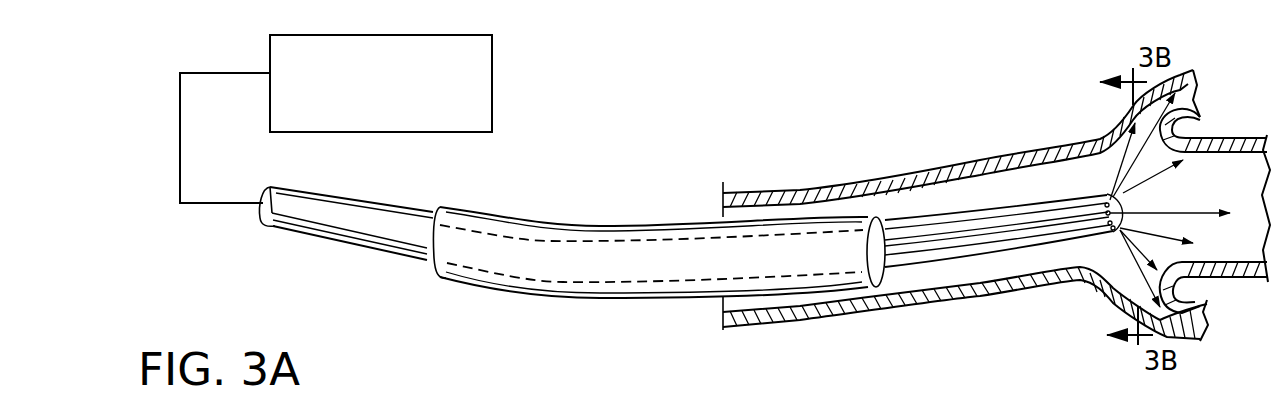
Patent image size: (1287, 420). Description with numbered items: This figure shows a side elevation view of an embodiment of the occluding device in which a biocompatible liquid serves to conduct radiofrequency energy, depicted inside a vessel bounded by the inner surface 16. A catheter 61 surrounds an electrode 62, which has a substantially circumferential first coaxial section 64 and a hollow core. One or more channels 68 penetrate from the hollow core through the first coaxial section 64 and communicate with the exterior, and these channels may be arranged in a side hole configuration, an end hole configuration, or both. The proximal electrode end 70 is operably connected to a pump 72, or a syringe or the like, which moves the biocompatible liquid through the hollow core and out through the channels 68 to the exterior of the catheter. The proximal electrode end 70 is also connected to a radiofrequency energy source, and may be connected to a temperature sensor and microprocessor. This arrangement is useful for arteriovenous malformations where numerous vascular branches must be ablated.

The pump 72 is at (358, 94).
The proximal electrode end 70 is at (367, 207).
The catheter 61 is at (690, 233).
The electrode 62 is at (880, 247).
The first coaxial section 64 is at (1017, 228).
The channels 68 is at (1105, 200).
The inner surface 16 is at (995, 165).